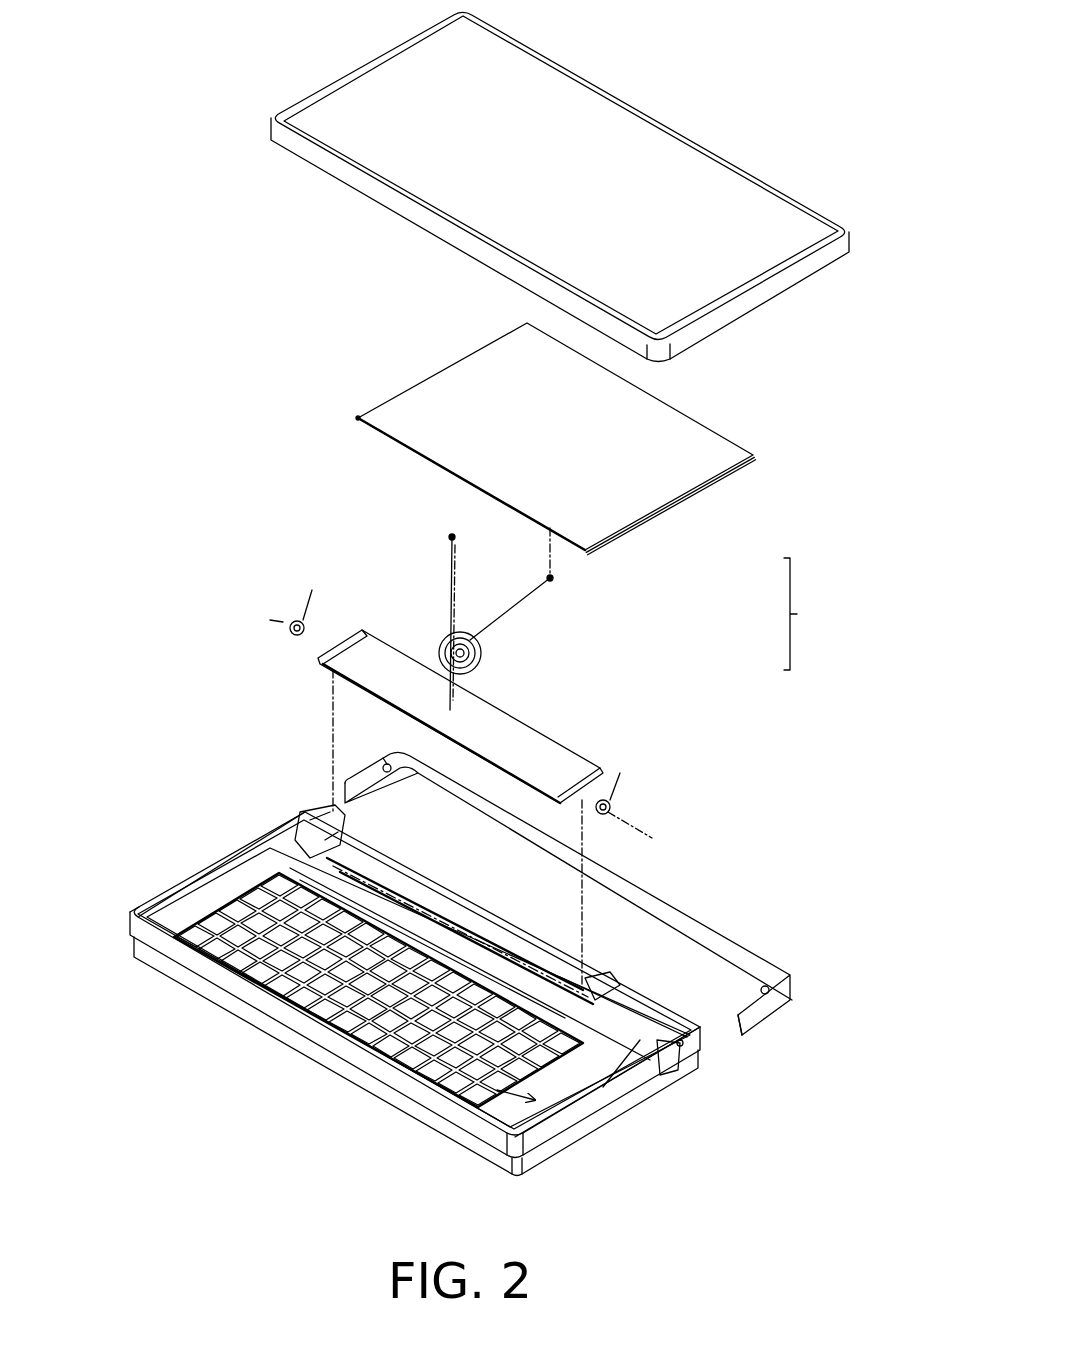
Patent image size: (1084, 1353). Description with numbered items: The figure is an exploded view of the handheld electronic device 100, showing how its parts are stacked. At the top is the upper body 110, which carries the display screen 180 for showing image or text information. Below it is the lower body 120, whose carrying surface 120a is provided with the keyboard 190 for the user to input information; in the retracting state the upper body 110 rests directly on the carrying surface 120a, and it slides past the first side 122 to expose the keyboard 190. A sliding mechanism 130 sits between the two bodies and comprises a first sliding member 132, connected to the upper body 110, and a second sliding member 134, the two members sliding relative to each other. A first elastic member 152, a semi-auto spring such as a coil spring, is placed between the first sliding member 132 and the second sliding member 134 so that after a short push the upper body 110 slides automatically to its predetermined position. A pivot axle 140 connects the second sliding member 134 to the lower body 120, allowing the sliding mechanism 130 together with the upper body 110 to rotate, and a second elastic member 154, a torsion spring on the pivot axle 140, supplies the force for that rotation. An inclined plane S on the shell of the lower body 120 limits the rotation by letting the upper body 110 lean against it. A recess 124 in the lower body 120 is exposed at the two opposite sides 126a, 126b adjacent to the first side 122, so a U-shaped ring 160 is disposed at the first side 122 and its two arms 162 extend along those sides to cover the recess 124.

The handheld electronic device 100 is at (759, 1245).
The upper body 110 is at (853, 240).
The display screen 180 is at (628, 148).
The lower body 120 is at (432, 1017).
The carrying surface 120a is at (495, 1087).
The first side 122 is at (660, 983).
The recess 124 is at (620, 1040).
The opposite side 126a is at (562, 1120).
The opposite side 126b is at (176, 868).
The sliding mechanism 130 is at (815, 614).
The first sliding member 132 is at (617, 497).
The second sliding member 134 is at (612, 748).
The pivot axle 140 is at (705, 1065).
The first elastic member 152 is at (456, 636).
The second elastic member 154 is at (305, 632).
The U-shaped ring 160 is at (601, 908).
The arms 162 is at (370, 785).
The keyboard 190 is at (333, 1012).
The inclined plane S is at (662, 1075).